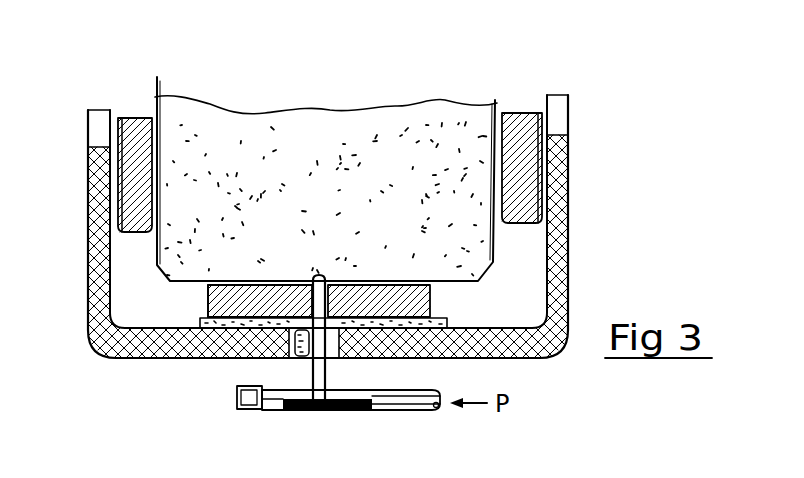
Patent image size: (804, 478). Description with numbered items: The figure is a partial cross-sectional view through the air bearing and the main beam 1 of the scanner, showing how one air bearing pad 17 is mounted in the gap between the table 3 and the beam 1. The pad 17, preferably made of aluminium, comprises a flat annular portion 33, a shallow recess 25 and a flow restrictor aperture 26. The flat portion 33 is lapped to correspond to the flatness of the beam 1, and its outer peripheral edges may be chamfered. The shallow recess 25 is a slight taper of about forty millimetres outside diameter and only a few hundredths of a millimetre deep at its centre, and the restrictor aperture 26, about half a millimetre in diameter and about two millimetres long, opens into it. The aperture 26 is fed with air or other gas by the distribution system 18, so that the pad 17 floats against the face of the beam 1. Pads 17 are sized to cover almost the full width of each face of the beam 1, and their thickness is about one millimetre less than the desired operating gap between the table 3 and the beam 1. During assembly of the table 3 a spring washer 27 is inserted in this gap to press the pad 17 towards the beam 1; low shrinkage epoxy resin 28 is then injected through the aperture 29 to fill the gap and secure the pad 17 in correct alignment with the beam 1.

The beam 1 is at (419, 138).
The table 3 is at (553, 238).
The air bearing pad 17 is at (212, 298).
The air distribution system 18 is at (413, 411).
The shallow recess 25 is at (292, 284).
The flow restrictor aperture 26 is at (318, 283).
The spring washer 27 is at (237, 287).
The low shrinkage epoxy resin 28 is at (205, 320).
The aperture 29 is at (305, 356).
The flat annular portion 33 is at (432, 285).